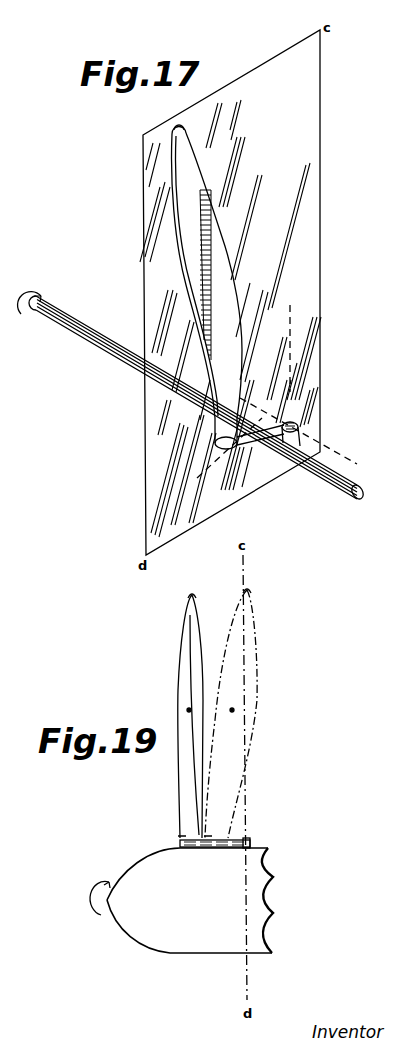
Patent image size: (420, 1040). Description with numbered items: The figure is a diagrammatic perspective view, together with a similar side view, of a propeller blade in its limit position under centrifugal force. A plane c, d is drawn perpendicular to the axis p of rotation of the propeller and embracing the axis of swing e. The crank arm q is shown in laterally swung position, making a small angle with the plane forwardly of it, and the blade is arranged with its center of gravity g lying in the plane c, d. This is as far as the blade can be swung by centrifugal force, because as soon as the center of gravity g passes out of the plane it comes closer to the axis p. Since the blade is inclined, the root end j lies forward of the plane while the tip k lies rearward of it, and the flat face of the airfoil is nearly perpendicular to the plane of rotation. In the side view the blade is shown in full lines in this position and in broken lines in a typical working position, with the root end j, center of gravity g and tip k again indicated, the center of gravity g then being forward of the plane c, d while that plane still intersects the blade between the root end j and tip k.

In FIG. 17, the axis p is at (131, 360).
In FIG. 17, the center of gravity g is at (205, 275).
In FIG. 19, the center of gravity g is at (189, 710).
In FIG. 17, the tip k is at (184, 126).
In FIG. 19, the tip k is at (191, 597).
In FIG. 17, the root end j is at (217, 445).
In FIG. 19, the root end j is at (180, 835).
In FIG. 17, the crank arm q is at (247, 448).
In FIG. 19, the crank arm q is at (190, 848).
In FIG. 17, the axis of swing e is at (299, 428).
In FIG. 19, the axis of swing e is at (250, 840).